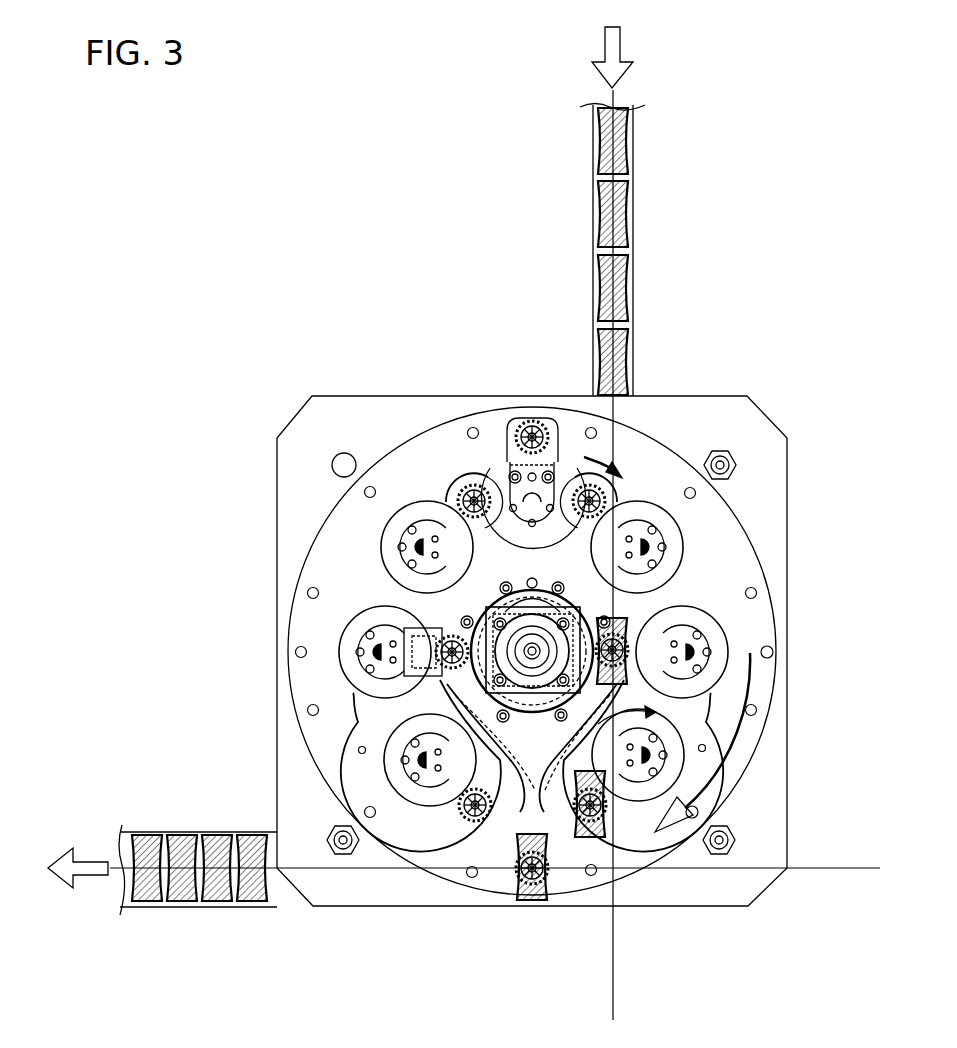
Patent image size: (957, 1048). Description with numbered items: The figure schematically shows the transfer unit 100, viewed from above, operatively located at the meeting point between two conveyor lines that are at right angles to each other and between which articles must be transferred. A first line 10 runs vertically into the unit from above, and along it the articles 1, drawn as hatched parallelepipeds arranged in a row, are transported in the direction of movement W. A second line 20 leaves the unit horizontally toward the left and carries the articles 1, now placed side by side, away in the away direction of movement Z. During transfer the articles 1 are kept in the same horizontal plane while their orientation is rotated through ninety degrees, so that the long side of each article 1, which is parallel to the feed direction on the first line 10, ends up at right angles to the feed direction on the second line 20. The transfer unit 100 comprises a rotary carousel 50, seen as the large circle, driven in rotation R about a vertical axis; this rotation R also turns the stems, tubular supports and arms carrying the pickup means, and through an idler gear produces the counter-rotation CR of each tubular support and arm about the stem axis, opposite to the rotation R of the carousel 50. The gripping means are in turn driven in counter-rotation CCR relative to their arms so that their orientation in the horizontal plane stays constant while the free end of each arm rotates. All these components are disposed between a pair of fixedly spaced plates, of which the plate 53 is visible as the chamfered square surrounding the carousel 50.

The article 1 is at (607, 146).
The first line 10 is at (595, 178).
The second line 20 is at (235, 835).
The rotary carousel 50 is at (645, 458).
The plate 53 is at (717, 410).
The transfer unit 100 is at (332, 345).
The direction of movement W is at (605, 40).
The away direction of movement Z is at (88, 862).
The counter-rotation of the gripping means CCR is at (588, 462).
The counter-rotation CR is at (660, 712).
The rotation of the carousel R is at (718, 757).